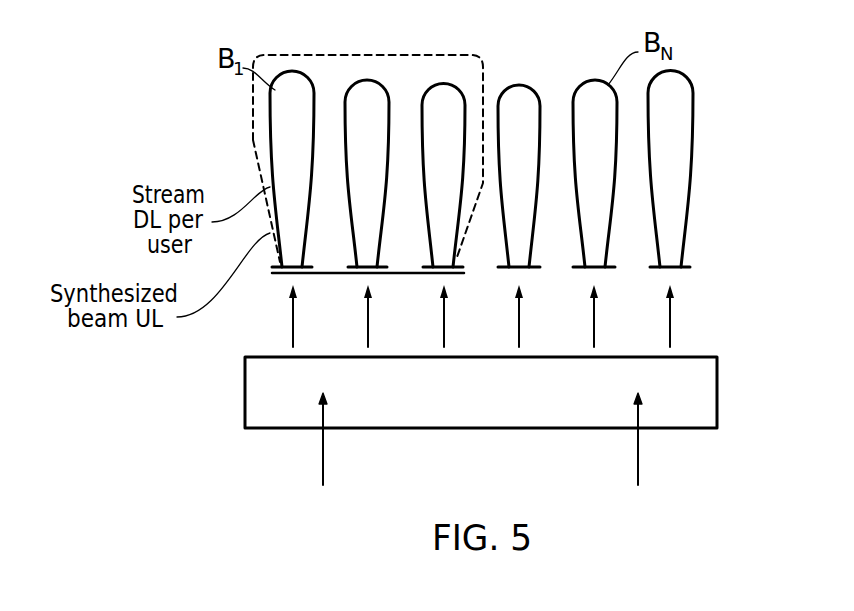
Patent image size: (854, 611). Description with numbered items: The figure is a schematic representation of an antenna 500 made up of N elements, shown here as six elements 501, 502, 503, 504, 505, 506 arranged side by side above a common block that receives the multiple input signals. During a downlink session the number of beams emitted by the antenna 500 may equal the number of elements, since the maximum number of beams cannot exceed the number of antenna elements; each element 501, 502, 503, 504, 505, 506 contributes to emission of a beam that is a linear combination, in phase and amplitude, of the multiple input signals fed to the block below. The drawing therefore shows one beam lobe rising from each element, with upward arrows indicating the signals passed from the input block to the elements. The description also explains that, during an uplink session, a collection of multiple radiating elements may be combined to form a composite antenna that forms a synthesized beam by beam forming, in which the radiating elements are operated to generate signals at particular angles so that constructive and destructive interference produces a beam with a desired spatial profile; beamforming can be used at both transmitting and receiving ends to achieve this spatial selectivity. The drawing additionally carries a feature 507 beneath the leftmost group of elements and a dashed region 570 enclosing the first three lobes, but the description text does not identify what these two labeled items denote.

The antenna 500 is at (730, 262).
The antenna element 501 is at (670, 269).
The antenna element 502 is at (595, 269).
The antenna element 503 is at (520, 269).
The antenna element 504 is at (455, 273).
The antenna element 505 is at (380, 274).
The antenna element 506 is at (303, 274).
The synthesized uplink beam 507 is at (285, 275).
The group of downlink stream beams per user 570 is at (253, 140).